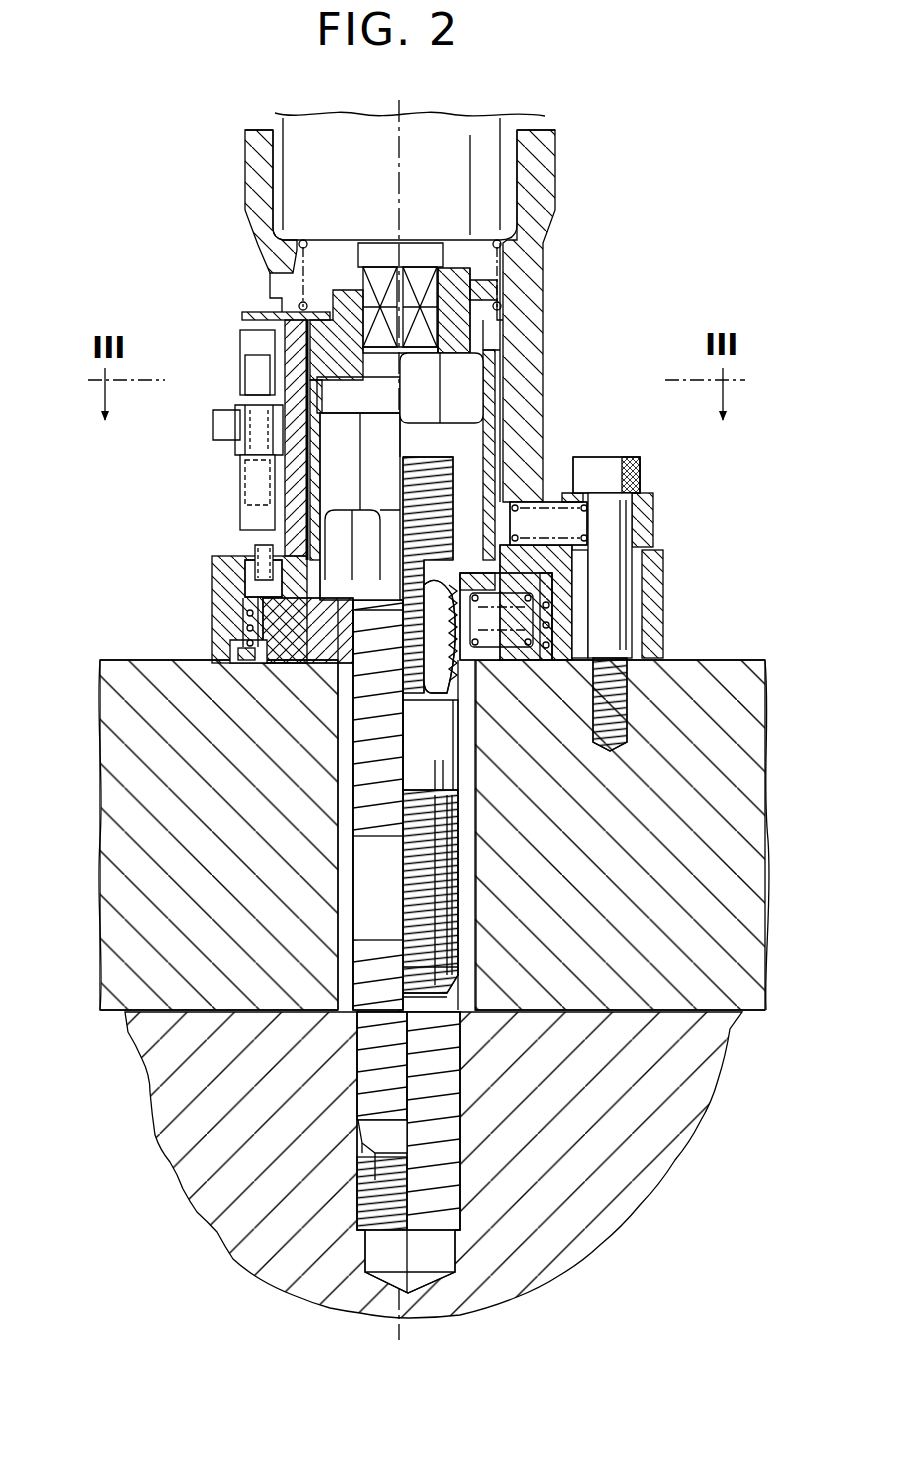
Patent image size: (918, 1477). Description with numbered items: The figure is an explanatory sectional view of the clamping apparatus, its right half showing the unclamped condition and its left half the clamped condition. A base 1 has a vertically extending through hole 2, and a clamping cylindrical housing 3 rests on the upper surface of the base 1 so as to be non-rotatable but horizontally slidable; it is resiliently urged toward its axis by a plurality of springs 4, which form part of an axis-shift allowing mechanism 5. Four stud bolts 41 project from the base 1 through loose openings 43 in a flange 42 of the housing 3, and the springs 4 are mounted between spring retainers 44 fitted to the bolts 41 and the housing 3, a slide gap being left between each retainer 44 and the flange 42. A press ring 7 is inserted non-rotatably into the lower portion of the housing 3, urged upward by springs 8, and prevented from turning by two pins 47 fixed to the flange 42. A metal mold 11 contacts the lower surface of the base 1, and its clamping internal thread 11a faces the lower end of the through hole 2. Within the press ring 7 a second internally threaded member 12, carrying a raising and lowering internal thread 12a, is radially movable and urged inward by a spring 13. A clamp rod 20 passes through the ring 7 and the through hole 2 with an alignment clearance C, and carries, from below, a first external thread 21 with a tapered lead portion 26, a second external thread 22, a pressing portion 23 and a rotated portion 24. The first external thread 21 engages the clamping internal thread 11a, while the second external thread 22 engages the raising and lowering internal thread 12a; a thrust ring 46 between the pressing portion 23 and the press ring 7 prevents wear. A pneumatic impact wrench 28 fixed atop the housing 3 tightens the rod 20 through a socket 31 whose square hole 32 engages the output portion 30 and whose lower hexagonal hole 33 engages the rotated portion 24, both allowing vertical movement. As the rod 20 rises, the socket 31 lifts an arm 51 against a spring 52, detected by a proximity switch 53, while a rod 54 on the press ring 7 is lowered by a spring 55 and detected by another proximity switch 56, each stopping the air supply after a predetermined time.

The base 1 is at (745, 827).
The through hole 2 is at (470, 856).
The clamping cylindrical housing 3 is at (548, 290).
The springs 4 is at (565, 494).
The axis-shift allowing mechanism 5 is at (683, 480).
The press ring 7 is at (292, 665).
The springs 8 is at (245, 630).
The metal mold 11 is at (680, 1125).
The clamping internal thread 11a is at (452, 1150).
The second internally threaded member 12 is at (478, 662).
The raising and lowering internal thread 12a is at (432, 685).
The spring 13 is at (492, 645).
The clamp rod 20 is at (462, 780).
The first external thread 21 is at (460, 912).
The second external thread 22 is at (455, 470).
The pressing portion 23 is at (420, 555).
The rotated portion 24 is at (352, 560).
The tapered lead portion 26 is at (478, 966).
The pneumatic impact wrench 28 is at (532, 172).
The output portion 30 is at (445, 288).
The socket 31 is at (503, 356).
The square hole 32 is at (510, 318).
The hexagonal hole 33 is at (468, 396).
The stud bolts 41 is at (615, 465).
The flange 42 is at (655, 570).
The loose openings 43 is at (640, 612).
The spring retainers 44 is at (648, 522).
The thrust ring 46 is at (335, 663).
The pins 47 is at (216, 598).
The arm 51 is at (240, 315).
The spring 52 is at (262, 248).
The proximity switch 53 is at (245, 344).
The rod 54 is at (250, 580).
The spring 55 is at (262, 555).
The proximity switch 56 is at (241, 516).
The alignment clearance C is at (345, 847).